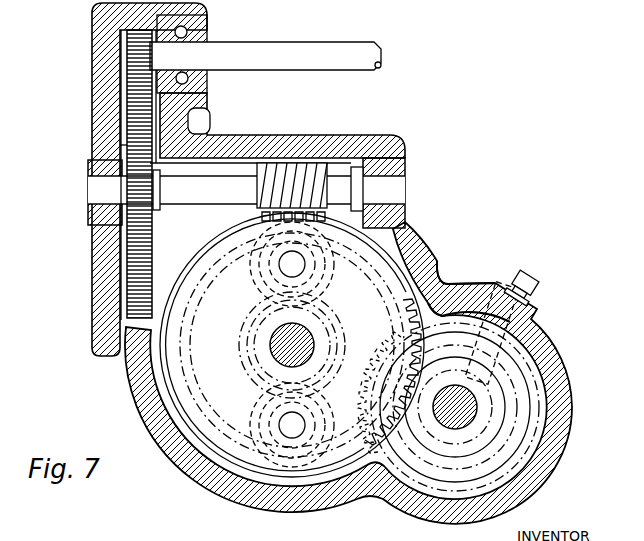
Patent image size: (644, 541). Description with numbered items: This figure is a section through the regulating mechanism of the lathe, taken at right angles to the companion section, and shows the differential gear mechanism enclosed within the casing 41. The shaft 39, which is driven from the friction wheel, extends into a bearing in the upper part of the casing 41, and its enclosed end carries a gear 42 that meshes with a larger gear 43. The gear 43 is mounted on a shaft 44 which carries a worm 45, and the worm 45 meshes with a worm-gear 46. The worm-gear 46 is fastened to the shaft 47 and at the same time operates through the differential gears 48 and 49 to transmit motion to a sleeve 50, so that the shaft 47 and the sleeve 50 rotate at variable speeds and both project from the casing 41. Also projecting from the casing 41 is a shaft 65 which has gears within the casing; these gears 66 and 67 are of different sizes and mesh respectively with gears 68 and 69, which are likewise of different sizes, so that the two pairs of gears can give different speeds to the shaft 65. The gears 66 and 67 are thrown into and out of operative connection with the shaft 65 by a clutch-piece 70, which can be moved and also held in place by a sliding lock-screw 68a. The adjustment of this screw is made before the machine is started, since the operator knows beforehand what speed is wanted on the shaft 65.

The shaft 39 is at (341, 50).
The casing 41 is at (112, 30).
The gear 42 is at (130, 63).
The larger gear 43 is at (130, 128).
The shaft 44 is at (95, 190).
The worm 45 is at (318, 164).
The worm-gear 46 is at (218, 234).
The shaft 47 is at (310, 339).
The differential gear 48 is at (308, 418).
The differential gear 49 is at (268, 408).
The sleeve 50 is at (240, 354).
The shaft 65 is at (478, 408).
The gear 66 is at (432, 354).
The gear 67 is at (385, 421).
The gear 68 is at (440, 280).
The sliding lock-screw 68a is at (540, 294).
The gear 69 is at (300, 443).
The clutch-piece 70 is at (490, 389).